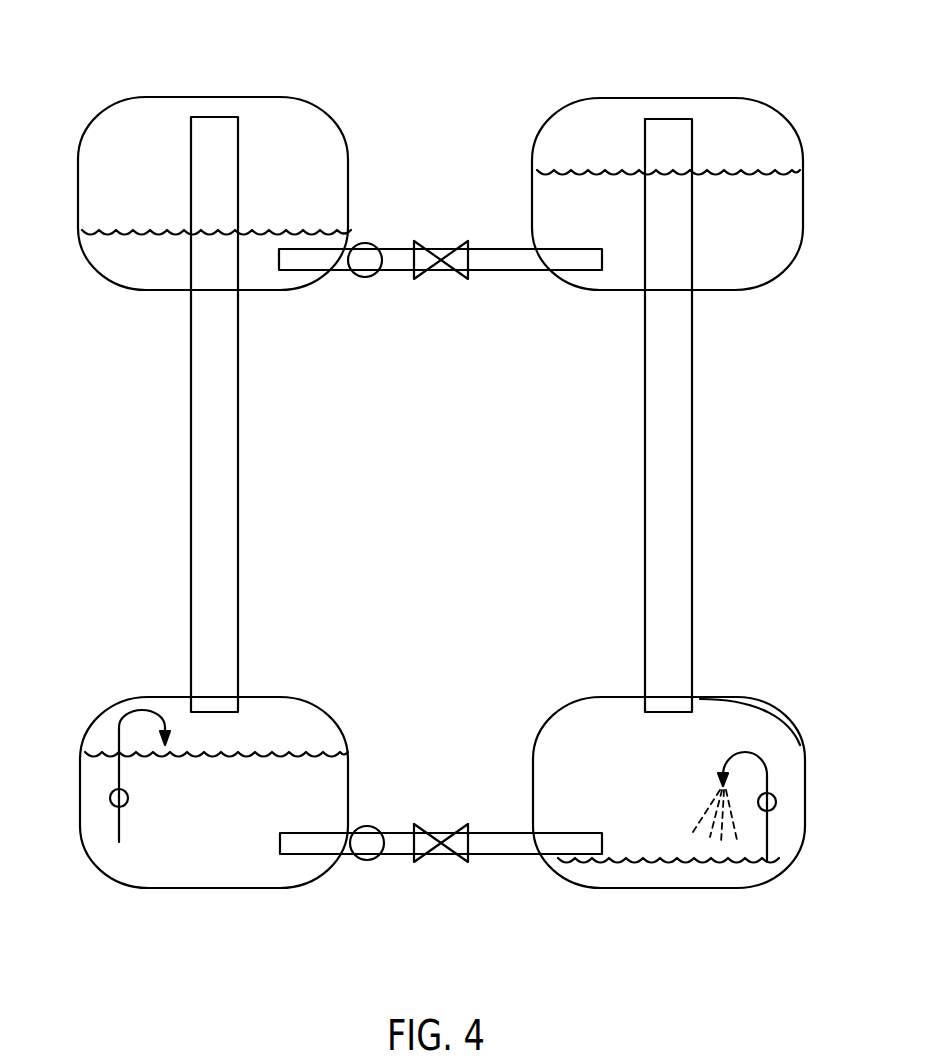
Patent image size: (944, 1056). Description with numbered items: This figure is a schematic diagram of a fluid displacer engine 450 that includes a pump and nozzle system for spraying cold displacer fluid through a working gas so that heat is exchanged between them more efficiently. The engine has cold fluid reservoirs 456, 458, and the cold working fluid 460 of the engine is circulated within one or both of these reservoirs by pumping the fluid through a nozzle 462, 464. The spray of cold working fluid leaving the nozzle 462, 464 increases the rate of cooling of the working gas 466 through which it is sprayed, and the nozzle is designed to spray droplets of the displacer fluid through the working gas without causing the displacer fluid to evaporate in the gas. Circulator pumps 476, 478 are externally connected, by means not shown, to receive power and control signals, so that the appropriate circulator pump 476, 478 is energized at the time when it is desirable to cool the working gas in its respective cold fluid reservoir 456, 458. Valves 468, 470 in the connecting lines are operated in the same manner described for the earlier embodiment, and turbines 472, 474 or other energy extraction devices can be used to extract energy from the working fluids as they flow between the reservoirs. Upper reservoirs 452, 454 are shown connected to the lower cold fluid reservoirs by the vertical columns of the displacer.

The fluid displacer engine 450 is at (140, 37).
The upper left tank 452 is at (97, 192).
The upper right tank 454 is at (780, 157).
The cold fluid reservoir 456 is at (110, 738).
The cold fluid reservoir 458 is at (785, 780).
The cold working fluid 460 is at (673, 878).
The nozzle 462 is at (302, 722).
The nozzle 464 is at (721, 776).
The working gas 466 is at (772, 738).
The valve 468 is at (365, 277).
The valve 470 is at (367, 860).
The turbine 472 is at (455, 263).
The turbine 474 is at (455, 843).
The circulator pump 476 is at (110, 801).
The circulator pump 478 is at (777, 803).